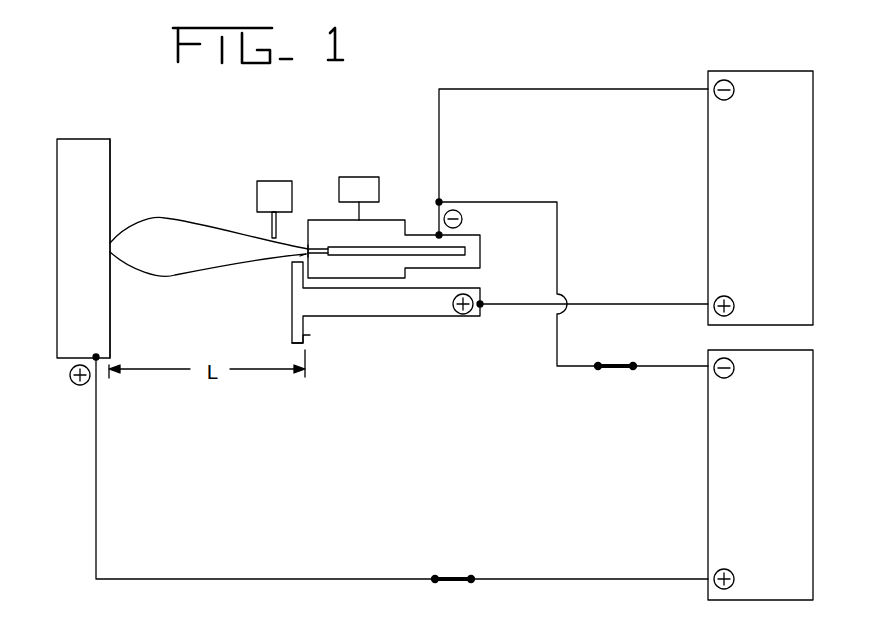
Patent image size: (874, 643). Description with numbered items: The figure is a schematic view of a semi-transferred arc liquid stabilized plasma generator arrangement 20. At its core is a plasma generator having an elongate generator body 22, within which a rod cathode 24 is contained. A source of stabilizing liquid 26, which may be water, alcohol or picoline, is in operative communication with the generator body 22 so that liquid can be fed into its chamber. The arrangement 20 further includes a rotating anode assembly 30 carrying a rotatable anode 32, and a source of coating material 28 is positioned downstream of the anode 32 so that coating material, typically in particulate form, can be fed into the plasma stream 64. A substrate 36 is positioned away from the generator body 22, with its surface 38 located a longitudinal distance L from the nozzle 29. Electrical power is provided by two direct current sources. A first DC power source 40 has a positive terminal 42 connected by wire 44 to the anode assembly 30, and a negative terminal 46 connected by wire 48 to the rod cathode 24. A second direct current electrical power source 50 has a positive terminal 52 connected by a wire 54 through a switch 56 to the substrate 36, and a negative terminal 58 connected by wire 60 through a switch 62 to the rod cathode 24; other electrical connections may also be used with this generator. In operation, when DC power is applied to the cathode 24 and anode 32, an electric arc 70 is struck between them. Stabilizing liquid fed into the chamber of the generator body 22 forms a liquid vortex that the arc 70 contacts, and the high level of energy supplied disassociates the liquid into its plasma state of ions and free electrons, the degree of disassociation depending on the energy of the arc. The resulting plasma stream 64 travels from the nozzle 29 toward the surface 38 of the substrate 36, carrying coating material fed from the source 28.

The plasma generator arrangement 20 is at (521, 84).
The generator body 22 is at (393, 220).
The rod cathode 24 is at (458, 252).
The source of stabilizing liquid 26 is at (360, 177).
The source of coating material 28 is at (285, 208).
The nozzle 29 is at (299, 248).
The rotating anode assembly 30 is at (377, 322).
The rotatable anode 32 is at (310, 335).
The substrate 36 is at (90, 153).
The surface 38 is at (111, 172).
The first DC power source 40 is at (776, 164).
The positive terminal 42 is at (713, 312).
The wire 44 is at (593, 304).
The negative terminal 46 is at (735, 80).
The wire 48 is at (613, 89).
The second direct current electrical power source 50 is at (768, 438).
The positive terminal 52 is at (715, 573).
The wire 54 is at (562, 581).
The switch 56 is at (453, 577).
The negative terminal 58 is at (715, 380).
The wire 60 is at (557, 350).
The switch 62 is at (618, 360).
The plasma stream 64 is at (191, 224).
The electric arc 70 is at (306, 254).